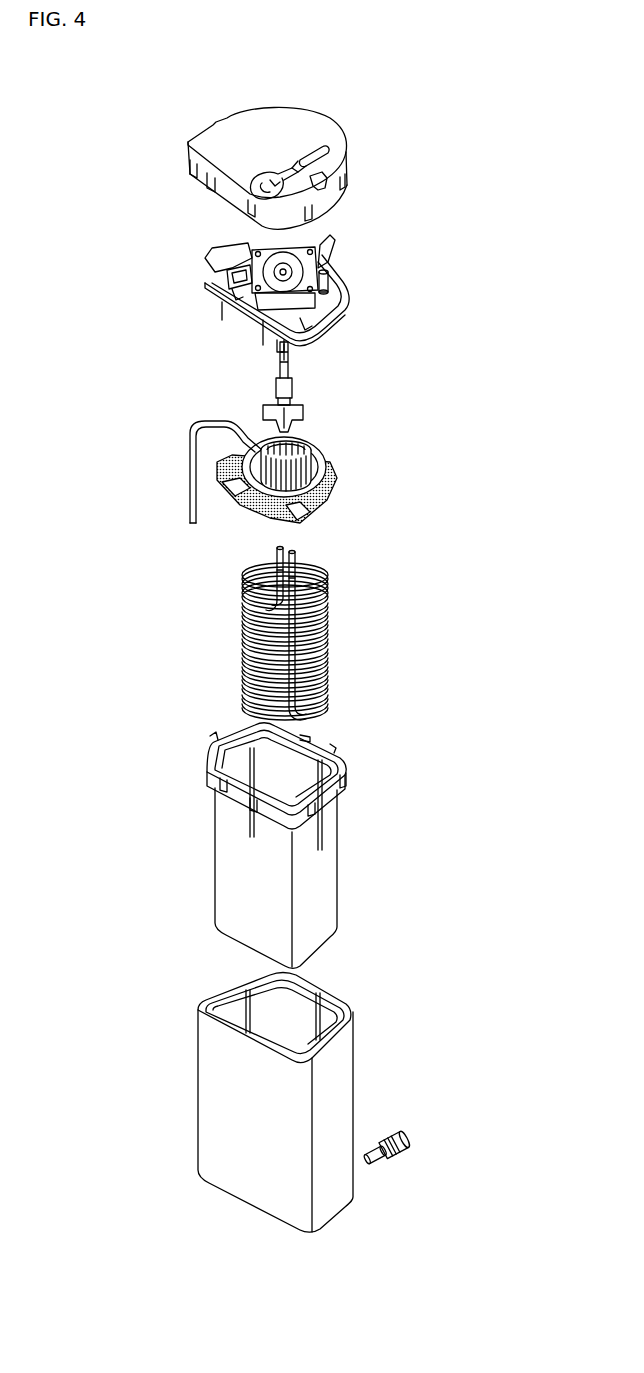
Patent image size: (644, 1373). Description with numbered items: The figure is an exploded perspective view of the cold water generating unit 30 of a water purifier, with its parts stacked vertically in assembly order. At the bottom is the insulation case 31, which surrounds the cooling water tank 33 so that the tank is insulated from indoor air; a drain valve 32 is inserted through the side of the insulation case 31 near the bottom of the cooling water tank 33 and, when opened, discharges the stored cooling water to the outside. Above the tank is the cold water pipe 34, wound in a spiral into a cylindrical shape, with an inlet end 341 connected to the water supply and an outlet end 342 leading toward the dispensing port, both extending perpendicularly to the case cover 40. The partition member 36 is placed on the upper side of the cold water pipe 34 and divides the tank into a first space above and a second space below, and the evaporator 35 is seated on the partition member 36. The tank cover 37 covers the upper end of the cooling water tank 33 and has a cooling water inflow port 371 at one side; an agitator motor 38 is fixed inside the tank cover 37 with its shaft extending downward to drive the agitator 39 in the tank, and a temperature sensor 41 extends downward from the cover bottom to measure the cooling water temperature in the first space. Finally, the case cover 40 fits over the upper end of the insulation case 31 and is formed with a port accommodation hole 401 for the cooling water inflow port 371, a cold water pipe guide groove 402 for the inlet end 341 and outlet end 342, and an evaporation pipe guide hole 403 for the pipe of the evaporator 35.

The cold water generating unit 30 is at (120, 328).
The insulation case 31 is at (343, 1077).
The drain valve 32 is at (415, 1138).
The cooling water tank 33 is at (330, 865).
The cold water pipe 34 is at (330, 660).
The inlet end 341 is at (293, 552).
The outlet end 342 is at (277, 550).
The evaporator 35 is at (327, 463).
The partition member 36 is at (310, 443).
The tank cover 37 is at (345, 260).
The cooling water inflow port 371 is at (330, 279).
The agitator motor 38 is at (283, 274).
The agitator 39 is at (288, 390).
The case cover 40 is at (333, 142).
The port accommodation hole 401 is at (317, 148).
The cold water pipe guide groove 402 is at (277, 170).
The evaporation pipe guide hole 403 is at (190, 170).
The temperature sensor 41 is at (218, 310).